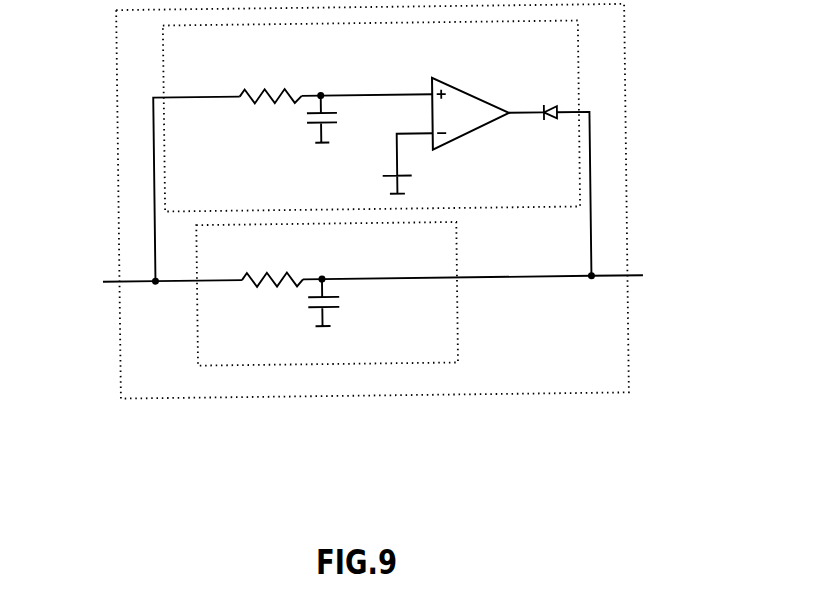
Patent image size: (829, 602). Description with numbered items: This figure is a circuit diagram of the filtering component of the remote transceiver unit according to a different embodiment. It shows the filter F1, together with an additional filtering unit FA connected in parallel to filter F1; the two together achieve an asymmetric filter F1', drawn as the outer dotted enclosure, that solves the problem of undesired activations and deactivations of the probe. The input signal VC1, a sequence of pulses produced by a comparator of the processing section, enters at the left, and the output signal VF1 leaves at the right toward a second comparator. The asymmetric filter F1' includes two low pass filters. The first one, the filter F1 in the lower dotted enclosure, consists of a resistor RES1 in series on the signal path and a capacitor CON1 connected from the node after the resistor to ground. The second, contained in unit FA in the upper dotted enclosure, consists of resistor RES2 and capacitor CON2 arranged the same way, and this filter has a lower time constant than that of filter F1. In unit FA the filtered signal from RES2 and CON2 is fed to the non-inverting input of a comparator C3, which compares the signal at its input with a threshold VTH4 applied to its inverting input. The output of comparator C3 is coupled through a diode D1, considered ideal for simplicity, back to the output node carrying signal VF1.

The resistor RES2 is at (259, 92).
The capacitor CON2 is at (314, 124).
The comparator C3 is at (458, 106).
The diode D1 is at (544, 105).
The additional filtering unit FA is at (562, 96).
The threshold VTH4 is at (429, 166).
The resistor RES1 is at (243, 280).
The capacitor CON1 is at (332, 306).
The filter F1 is at (354, 295).
The asymmetric filter F1' is at (411, 201).
The signal VC1 is at (97, 288).
The signal VF1 is at (652, 265).